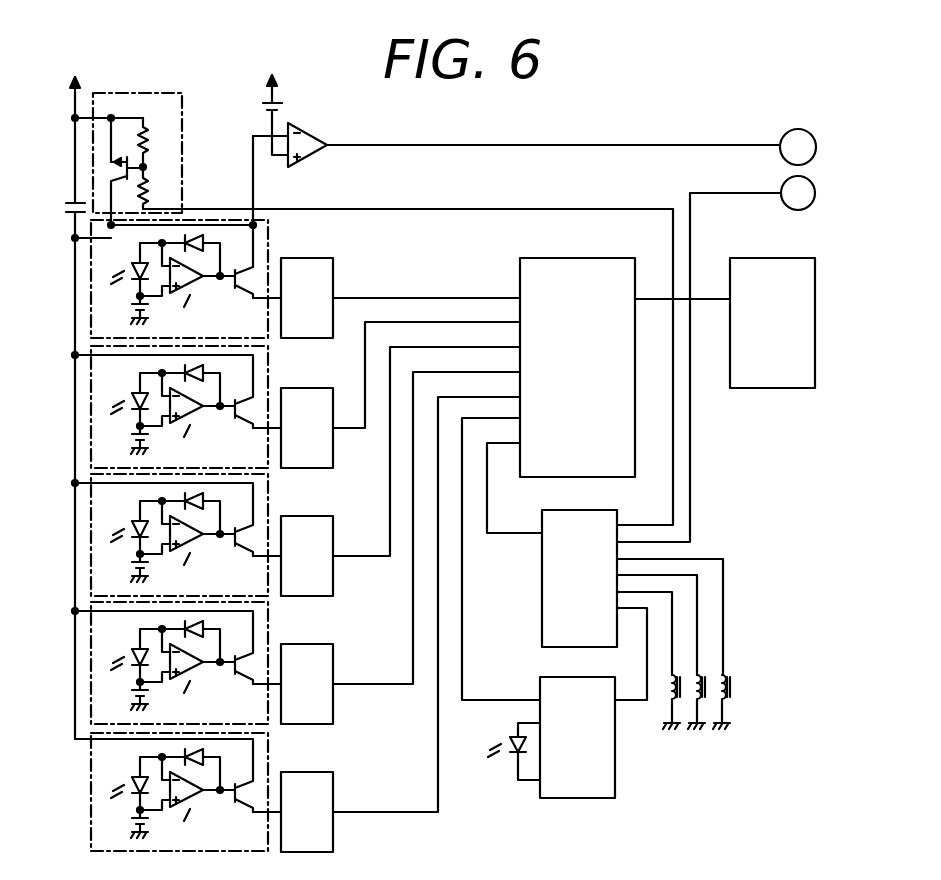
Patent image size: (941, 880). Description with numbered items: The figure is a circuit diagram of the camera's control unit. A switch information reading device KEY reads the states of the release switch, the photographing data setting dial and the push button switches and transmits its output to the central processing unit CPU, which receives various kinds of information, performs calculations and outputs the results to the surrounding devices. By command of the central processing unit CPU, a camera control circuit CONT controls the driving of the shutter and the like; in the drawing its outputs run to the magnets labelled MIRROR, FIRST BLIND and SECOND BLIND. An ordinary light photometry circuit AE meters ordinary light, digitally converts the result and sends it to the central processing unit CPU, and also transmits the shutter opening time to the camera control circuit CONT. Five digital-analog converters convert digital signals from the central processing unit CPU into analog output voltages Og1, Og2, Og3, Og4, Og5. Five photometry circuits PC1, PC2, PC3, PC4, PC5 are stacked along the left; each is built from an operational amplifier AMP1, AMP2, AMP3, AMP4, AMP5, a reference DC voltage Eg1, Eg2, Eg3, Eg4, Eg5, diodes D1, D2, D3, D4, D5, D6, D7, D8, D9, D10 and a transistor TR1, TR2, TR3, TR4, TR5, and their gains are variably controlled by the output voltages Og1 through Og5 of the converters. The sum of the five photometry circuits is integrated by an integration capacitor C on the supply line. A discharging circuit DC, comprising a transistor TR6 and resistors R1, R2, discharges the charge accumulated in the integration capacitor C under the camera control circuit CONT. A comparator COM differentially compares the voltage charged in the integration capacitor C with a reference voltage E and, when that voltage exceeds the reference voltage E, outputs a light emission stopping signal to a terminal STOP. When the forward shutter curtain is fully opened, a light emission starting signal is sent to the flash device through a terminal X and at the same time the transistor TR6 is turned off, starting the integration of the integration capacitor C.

The discharging circuit DC is at (113, 146).
The transistor TR6 is at (105, 172).
The resistor R1 is at (158, 142).
The resistor R2 is at (158, 188).
The integration capacitor C is at (69, 197).
The reference voltage E is at (267, 115).
The comparator COM is at (516, 150).
The terminal STOP is at (761, 145).
The terminal X is at (716, 356).
The central processing unit CPU is at (577, 367).
The switch information reading device KEY is at (725, 323).
The camera control circuit CONT is at (579, 578).
The ordinary light photometry circuit AE is at (551, 737).
The mirror drive magnet MIRROR is at (670, 735).
The first blind drive magnet FIRST BLIND is at (700, 730).
The second blind drive magnet SECOND BLIND is at (728, 718).
The photometry circuit PC1 is at (143, 279).
The photometry circuit PC2 is at (143, 407).
The photometry circuit PC3 is at (143, 535).
The photometry circuit PC4 is at (143, 663).
The photometry circuit PC5 is at (153, 806).
The diode D1 is at (195, 256).
The diode D2 is at (129, 271).
The diode D3 is at (195, 386).
The diode D4 is at (129, 401).
The diode D5 is at (195, 514).
The diode D6 is at (129, 529).
The diode D7 is at (195, 642).
The diode D8 is at (129, 657).
The diode D9 is at (195, 770).
The diode D10 is at (125, 785).
The operational amplifier AMP1 is at (182, 294).
The operational amplifier AMP2 is at (182, 424).
The operational amplifier AMP3 is at (182, 552).
The operational amplifier AMP4 is at (182, 680).
The operational amplifier AMP5 is at (182, 808).
The transistor TR1 is at (228, 288).
The transistor TR2 is at (228, 418).
The transistor TR3 is at (228, 546).
The transistor TR4 is at (228, 674).
The transistor TR5 is at (228, 802).
The reference DC voltage Eg1 is at (120, 310).
The reference DC voltage Eg2 is at (120, 440).
The reference DC voltage Eg3 is at (120, 568).
The reference DC voltage Eg4 is at (120, 696).
The reference DC voltage Eg5 is at (119, 824).
The output voltage Og1 is at (249, 315).
The output voltage Og2 is at (249, 445).
The output voltage Og3 is at (249, 573).
The output voltage Og4 is at (249, 701).
The output voltage Og5 is at (256, 846).